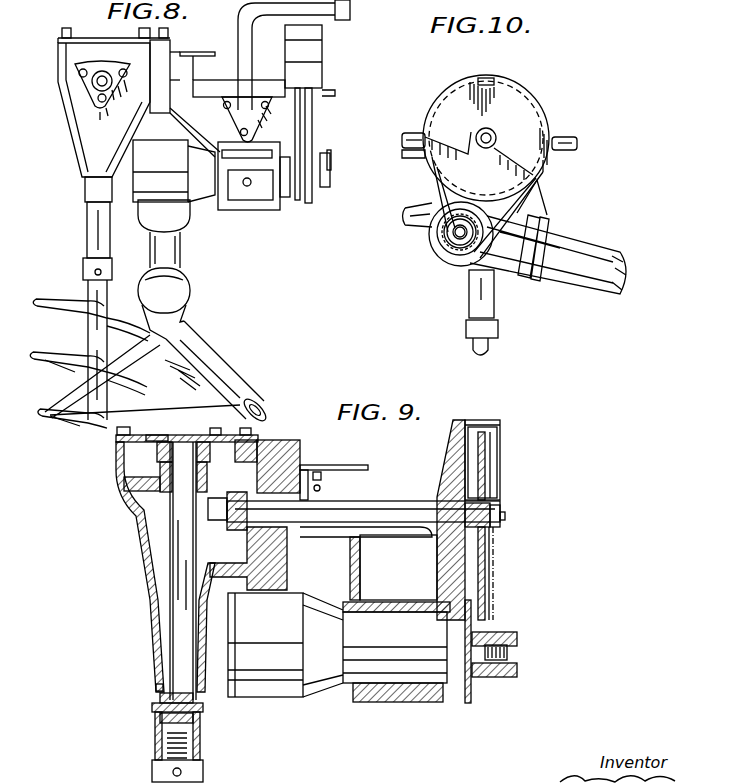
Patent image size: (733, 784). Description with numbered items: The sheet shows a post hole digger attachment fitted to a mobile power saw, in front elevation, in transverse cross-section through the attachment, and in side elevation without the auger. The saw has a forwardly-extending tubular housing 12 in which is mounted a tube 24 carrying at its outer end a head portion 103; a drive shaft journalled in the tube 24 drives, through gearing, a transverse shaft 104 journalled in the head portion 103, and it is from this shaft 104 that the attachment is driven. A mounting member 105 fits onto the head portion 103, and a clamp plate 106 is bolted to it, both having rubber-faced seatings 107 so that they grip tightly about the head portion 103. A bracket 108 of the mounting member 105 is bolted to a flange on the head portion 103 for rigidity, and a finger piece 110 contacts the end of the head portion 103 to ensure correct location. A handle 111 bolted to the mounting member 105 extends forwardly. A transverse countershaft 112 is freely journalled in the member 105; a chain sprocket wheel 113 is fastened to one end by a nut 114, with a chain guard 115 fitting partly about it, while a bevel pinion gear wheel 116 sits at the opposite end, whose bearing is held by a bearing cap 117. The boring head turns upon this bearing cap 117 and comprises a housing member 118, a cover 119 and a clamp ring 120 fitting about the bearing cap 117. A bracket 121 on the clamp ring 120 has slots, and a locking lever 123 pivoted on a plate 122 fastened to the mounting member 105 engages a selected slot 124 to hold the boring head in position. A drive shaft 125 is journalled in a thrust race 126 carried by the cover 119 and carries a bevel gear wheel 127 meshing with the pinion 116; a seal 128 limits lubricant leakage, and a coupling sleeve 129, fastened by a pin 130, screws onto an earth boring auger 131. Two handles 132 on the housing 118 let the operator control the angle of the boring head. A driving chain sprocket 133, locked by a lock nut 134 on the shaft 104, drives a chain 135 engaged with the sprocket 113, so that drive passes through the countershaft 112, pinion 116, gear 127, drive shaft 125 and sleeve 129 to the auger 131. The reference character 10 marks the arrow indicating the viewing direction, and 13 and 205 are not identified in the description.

In FIG. 9, the arrow indicating direction 10 is at (517, 518).
In FIG. 8, the tubular housing 12 is at (190, 308).
In FIG. 10, the drive disc 13 is at (486, 138).
In FIG. 8, the tube 24 is at (172, 258).
In FIG. 10, the tube 24 is at (598, 248).
In FIG. 8, the head portion 103 is at (176, 165).
In FIG. 9, the head portion 103 is at (285, 633).
In FIG. 10, the transverse shaft 104 is at (455, 245).
In FIG. 9, the transverse shaft 104 is at (508, 652).
In FIG. 8, the mounting member 105 is at (232, 97).
In FIG. 8, the clamp plate 106 is at (247, 192).
In FIG. 10, the clamp plate 106 is at (430, 232).
In FIG. 9, the clamp plate 106 is at (425, 700).
In FIG. 9, the rubber-faced seatings 107 is at (416, 612).
In FIG. 8, the bracket 108 is at (183, 128).
In FIG. 10, the bracket 108 is at (535, 200).
In FIG. 9, the finger piece 110 is at (465, 593).
In FIG. 8, the handle 111 is at (313, 4).
In FIG. 10, the handle 111 is at (420, 170).
In FIG. 9, the transverse countershaft 112 is at (382, 502).
In FIG. 9, the chain sprocket wheel 113 is at (492, 453).
In FIG. 10, the nut 114 is at (489, 130).
In FIG. 9, the nut 114 is at (502, 509).
In FIG. 10, the chain guard 115 is at (484, 78).
In FIG. 9, the chain guard 115 is at (500, 436).
In FIG. 9, the bevel pinion gear wheel 116 is at (238, 531).
In FIG. 9, the bearing cap 117 is at (258, 440).
In FIG. 8, the housing member 118 is at (100, 131).
In FIG. 9, the housing member 118 is at (142, 540).
In FIG. 9, the cover 119 is at (142, 438).
In FIG. 9, the clamp ring 120 is at (282, 440).
In FIG. 9, the bracket 121 is at (300, 446).
In FIG. 9, the plate 122 is at (300, 548).
In FIG. 9, the locking lever 123 is at (350, 465).
In FIG. 9, the slot 124 is at (321, 482).
In FIG. 9, the drive shaft 125 is at (178, 663).
In FIG. 9, the thrust race 126 is at (172, 440).
In FIG. 9, the bevel gear wheel 127 is at (122, 487).
In FIG. 9, the seal 128 is at (156, 687).
In FIG. 8, the coupling sleeve 129 is at (90, 242).
In FIG. 10, the coupling sleeve 129 is at (494, 304).
In FIG. 9, the coupling sleeve 129 is at (155, 733).
In FIG. 9, the pin 130 is at (152, 708).
In FIG. 8, the earth boring auger 131 is at (90, 290).
In FIG. 10, the earth boring auger 131 is at (471, 346).
In FIG. 9, the earth boring auger 131 is at (152, 770).
In FIG. 10, the handles 132 is at (412, 133).
In FIG. 10, the driving chain sprocket 133 is at (462, 243).
In FIG. 9, the driving chain sprocket 133 is at (490, 672).
In FIG. 10, the lock nut 134 is at (450, 248).
In FIG. 9, the lock nut 134 is at (510, 669).
In FIG. 9, the chain 135 is at (490, 612).
In FIG. 9, the gear housing 205 is at (424, 587).